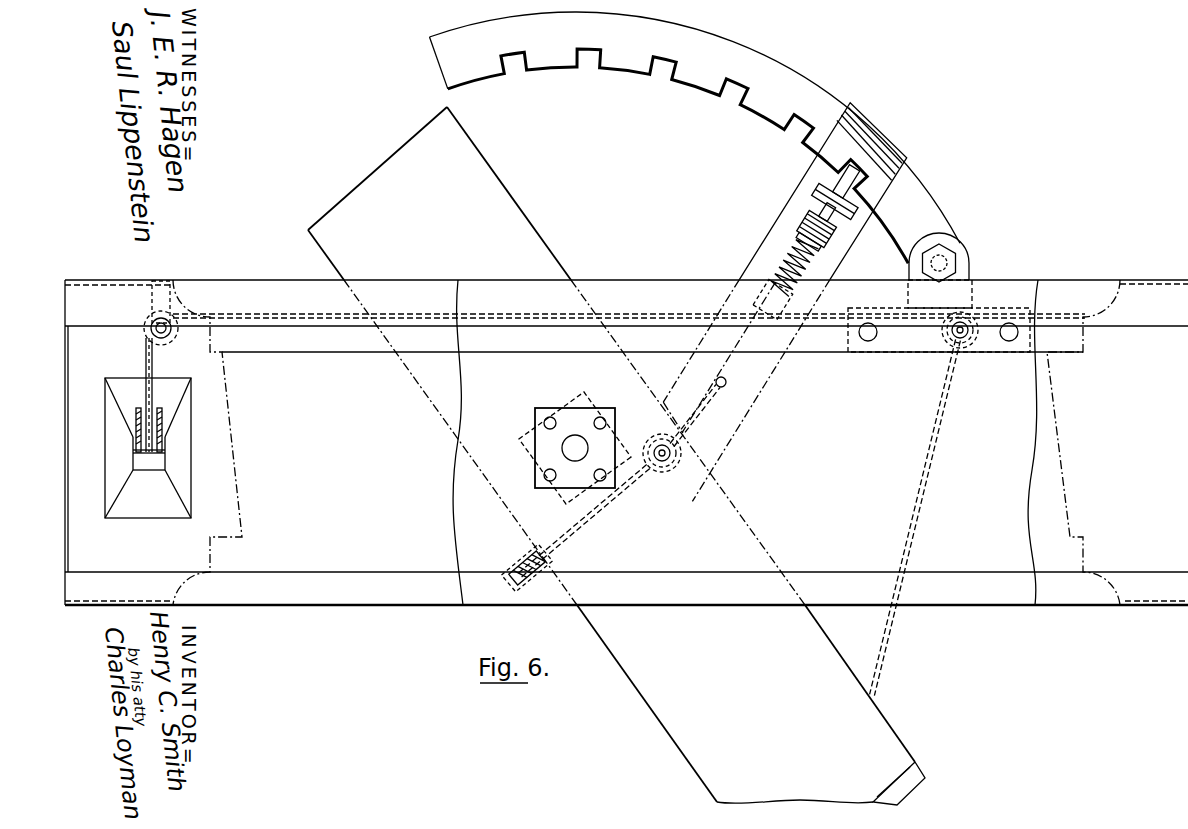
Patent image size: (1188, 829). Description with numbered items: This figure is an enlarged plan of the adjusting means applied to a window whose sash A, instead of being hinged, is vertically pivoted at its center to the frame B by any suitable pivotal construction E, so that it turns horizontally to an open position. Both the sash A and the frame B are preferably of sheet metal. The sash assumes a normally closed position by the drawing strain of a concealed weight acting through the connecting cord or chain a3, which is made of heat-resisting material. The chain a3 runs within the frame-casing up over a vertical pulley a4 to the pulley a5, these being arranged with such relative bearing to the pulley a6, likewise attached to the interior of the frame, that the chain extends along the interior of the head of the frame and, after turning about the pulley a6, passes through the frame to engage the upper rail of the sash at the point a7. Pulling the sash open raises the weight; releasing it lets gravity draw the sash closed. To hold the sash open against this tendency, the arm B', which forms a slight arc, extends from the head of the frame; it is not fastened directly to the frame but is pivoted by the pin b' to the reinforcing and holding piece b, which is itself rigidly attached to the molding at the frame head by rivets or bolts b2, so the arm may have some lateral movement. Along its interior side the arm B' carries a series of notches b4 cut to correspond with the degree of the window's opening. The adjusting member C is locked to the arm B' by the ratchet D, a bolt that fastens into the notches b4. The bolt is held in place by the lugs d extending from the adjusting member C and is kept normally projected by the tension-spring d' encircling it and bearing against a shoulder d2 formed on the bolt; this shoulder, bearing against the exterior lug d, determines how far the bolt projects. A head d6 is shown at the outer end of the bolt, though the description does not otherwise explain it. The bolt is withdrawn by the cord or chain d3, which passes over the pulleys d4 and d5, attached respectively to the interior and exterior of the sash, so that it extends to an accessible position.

The window-sash A is at (616, 456).
The frame B is at (626, 466).
The arm B' is at (695, 127).
The reinforcing and holding piece b is at (939, 316).
The pin b' is at (955, 248).
The rivets or bolts b2 is at (868, 341).
The notches b4 is at (661, 80).
The adjusting member C is at (762, 259).
The ratchet D is at (817, 217).
The lugs d is at (840, 222).
The tension-spring d' is at (774, 262).
The shoulder d2 is at (797, 240).
The cord or chain d3 is at (645, 490).
The pulley d4 is at (660, 470).
The pulley d5 is at (520, 590).
The cross head d6 is at (818, 190).
The pivotal construction E is at (572, 460).
The connecting cord or chain a3 is at (881, 664).
The vertical pulley a4 is at (160, 415).
The pulley a5 is at (171, 338).
The pulley a6 is at (950, 339).
The point of engagement a7 is at (890, 699).